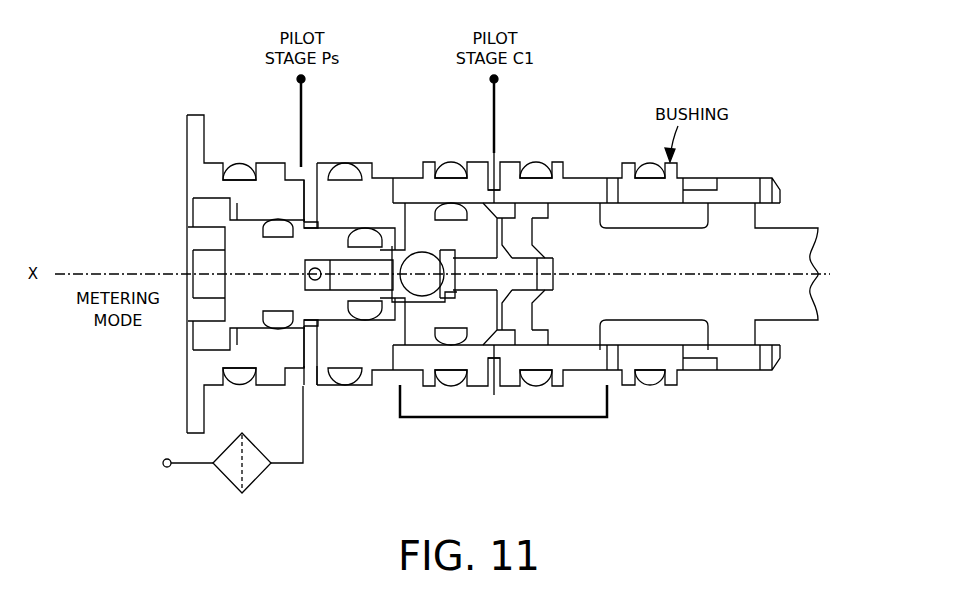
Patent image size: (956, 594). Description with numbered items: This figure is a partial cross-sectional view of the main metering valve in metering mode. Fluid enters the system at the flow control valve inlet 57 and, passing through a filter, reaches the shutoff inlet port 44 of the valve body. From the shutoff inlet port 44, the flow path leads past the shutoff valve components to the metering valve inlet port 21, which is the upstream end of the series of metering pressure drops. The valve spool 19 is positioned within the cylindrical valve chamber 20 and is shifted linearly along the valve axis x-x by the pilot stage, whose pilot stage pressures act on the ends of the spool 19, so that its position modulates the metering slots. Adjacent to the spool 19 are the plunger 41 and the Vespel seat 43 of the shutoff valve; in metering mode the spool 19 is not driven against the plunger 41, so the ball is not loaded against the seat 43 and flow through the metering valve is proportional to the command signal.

The valve spool 19 is at (782, 302).
The valve chamber 20 is at (741, 366).
The metering valve inlet port 21 is at (617, 388).
The plunger 41 is at (481, 281).
The Vespel seat 43 is at (422, 250).
The shutoff inlet port 44 is at (313, 390).
The flow control valve inlet 57 is at (158, 470).